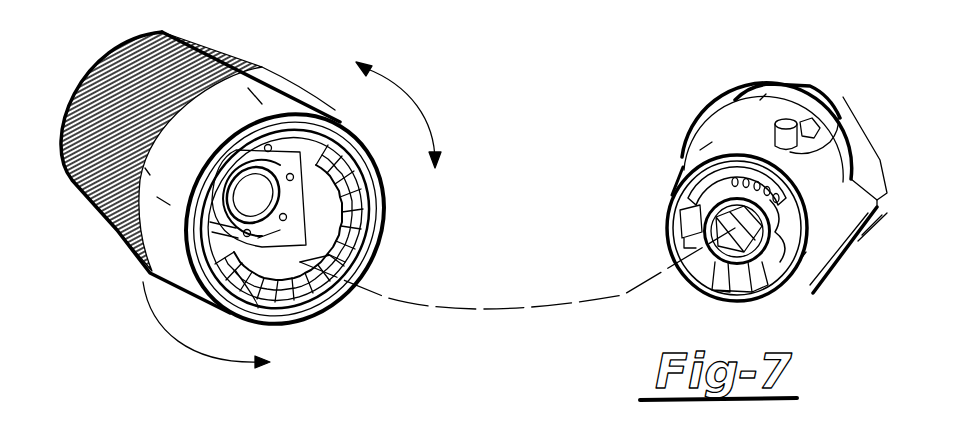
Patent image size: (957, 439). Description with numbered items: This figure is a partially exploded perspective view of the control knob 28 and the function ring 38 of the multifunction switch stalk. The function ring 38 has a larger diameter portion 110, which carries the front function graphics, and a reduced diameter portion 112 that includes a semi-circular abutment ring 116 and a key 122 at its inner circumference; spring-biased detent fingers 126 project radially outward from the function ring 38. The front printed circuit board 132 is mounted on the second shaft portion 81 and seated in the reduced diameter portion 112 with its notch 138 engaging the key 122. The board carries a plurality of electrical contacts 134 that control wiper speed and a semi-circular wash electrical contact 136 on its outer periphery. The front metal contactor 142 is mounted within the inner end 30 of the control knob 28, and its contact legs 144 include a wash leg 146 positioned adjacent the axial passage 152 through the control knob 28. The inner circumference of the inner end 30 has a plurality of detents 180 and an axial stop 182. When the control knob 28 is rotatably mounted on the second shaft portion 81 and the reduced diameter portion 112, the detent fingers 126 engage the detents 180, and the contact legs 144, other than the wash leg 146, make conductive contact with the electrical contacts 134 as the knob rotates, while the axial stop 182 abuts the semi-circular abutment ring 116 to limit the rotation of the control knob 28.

The control knob 28 is at (257, 60).
The inner end 30 is at (372, 197).
The function ring 38 is at (793, 75).
The second shaft portion 81 is at (740, 200).
The larger diameter portion 110 is at (747, 90).
The reduced diameter portion 112 is at (720, 140).
The semi-circular abutment ring 116 is at (823, 127).
The key 122 is at (675, 222).
The detent finger 126 is at (810, 143).
The front printed circuit board 132 is at (795, 290).
The electrical contacts 134 is at (797, 293).
The semi-circular wash electrical contact 136 is at (878, 228).
The notch 138 is at (672, 243).
The front metal contactor 142 is at (316, 97).
The contact legs 144 is at (213, 77).
The wash leg 146 is at (222, 232).
The axial passage 152 is at (258, 308).
The detents 180 is at (343, 165).
The axial stop 182 is at (330, 255).